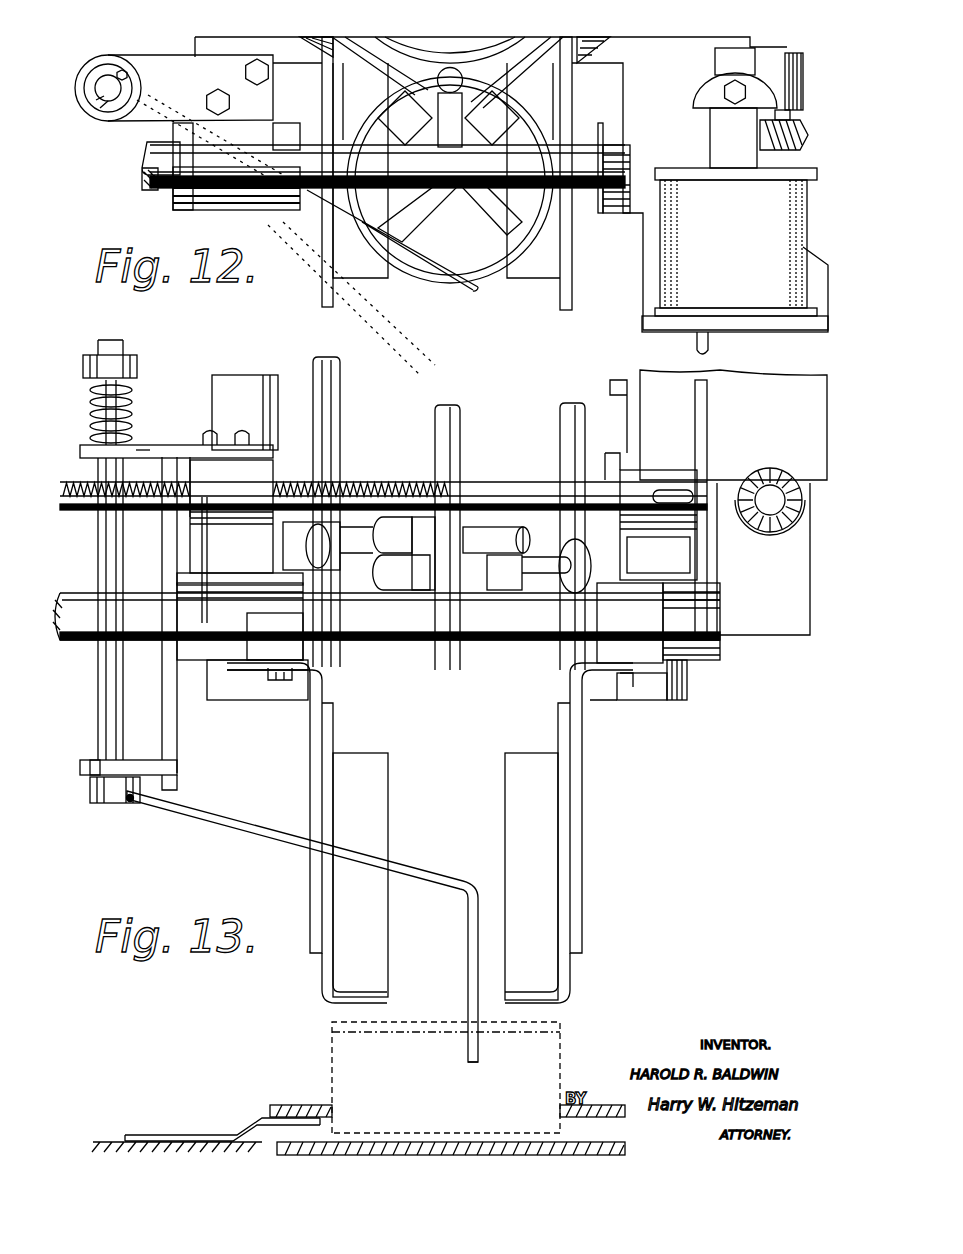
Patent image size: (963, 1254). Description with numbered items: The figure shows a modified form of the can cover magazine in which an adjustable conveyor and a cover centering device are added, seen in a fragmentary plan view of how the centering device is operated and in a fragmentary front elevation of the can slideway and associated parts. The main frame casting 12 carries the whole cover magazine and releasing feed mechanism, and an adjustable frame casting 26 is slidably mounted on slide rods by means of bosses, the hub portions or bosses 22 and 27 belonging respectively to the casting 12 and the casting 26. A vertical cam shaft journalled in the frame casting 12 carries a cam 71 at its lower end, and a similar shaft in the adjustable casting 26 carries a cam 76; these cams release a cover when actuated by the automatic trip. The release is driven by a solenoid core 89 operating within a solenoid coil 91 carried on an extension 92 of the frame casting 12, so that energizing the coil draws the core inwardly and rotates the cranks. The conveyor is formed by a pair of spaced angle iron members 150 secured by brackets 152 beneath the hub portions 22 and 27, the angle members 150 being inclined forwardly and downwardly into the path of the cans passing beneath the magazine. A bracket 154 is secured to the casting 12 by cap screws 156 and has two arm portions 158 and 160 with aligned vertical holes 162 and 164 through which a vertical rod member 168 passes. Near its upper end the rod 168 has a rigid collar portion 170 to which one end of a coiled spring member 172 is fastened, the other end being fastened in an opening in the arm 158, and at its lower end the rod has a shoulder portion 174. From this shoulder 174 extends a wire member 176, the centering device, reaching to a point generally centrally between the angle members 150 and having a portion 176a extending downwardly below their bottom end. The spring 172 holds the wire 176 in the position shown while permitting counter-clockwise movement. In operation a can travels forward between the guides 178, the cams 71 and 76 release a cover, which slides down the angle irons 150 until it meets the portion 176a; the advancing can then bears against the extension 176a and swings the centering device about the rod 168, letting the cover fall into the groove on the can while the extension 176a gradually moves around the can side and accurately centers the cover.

In FIG. 13, the frame casting 12 is at (252, 562).
In FIG. 13, the boss 22 is at (203, 667).
In FIG. 13, the adjustable frame casting 26 is at (675, 562).
In FIG. 13, the boss 27 is at (705, 665).
In FIG. 13, the cam 71 is at (262, 690).
In FIG. 13, the cam 76 is at (657, 700).
In FIG. 12, the solenoid core 89 is at (740, 139).
In FIG. 12, the solenoid coil 91 is at (675, 180).
In FIG. 12, the extension 92 is at (752, 330).
In FIG. 13, the angle iron member 150 is at (520, 802).
In FIG. 13, the bracket 152 is at (307, 735).
In FIG. 13, the bracket 154 is at (163, 781).
In FIG. 12, the cap screw 156 is at (232, 80).
In FIG. 13, the cap screw 156 is at (243, 430).
In FIG. 13, the arm portion 158 is at (140, 456).
In FIG. 13, the arm portion 160 is at (107, 797).
In FIG. 13, the vertical hole 162 is at (97, 762).
In FIG. 13, the vertical hole 164 is at (140, 446).
In FIG. 12, the rod member 168 is at (115, 121).
In FIG. 13, the rod member 168 is at (106, 695).
In FIG. 12, the collar portion 170 is at (128, 78).
In FIG. 13, the collar portion 170 is at (137, 366).
In FIG. 13, the coiled spring member 172 is at (90, 419).
In FIG. 13, the shoulder portion 174 is at (130, 802).
In FIG. 12, the wire member 176 is at (462, 285).
In FIG. 13, the wire member 176 is at (283, 847).
In FIG. 13, the downwardly extending portion 176a is at (474, 977).
In FIG. 13, the guide 178 is at (305, 1088).